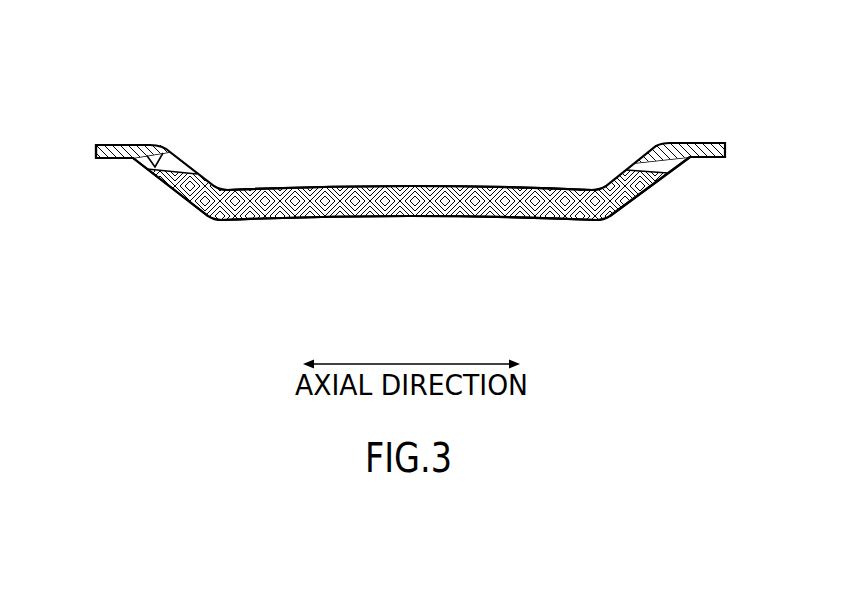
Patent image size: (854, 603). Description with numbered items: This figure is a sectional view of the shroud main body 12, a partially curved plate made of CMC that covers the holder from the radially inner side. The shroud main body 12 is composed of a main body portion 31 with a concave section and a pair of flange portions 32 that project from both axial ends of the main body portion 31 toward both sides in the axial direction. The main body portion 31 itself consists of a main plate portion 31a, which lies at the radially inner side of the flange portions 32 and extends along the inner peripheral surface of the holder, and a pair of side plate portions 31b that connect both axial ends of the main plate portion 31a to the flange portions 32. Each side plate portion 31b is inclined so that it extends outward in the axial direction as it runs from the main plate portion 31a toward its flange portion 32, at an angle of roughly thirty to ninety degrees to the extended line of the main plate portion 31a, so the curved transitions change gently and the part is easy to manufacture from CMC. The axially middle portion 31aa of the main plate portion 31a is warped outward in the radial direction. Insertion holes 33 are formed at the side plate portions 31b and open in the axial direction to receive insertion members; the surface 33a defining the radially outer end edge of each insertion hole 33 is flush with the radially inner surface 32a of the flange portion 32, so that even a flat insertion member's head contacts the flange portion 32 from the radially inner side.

The shroud main body 12 is at (540, 112).
The main body portion 31 is at (315, 218).
The main plate portion 31a is at (398, 216).
The axially middle portion 31aa is at (413, 186).
The side plate portion 31b is at (177, 193).
The flange portion 32 is at (120, 145).
The radially inner surface 32a is at (110, 160).
The insertion hole 33 is at (173, 167).
The surface 33a is at (153, 155).